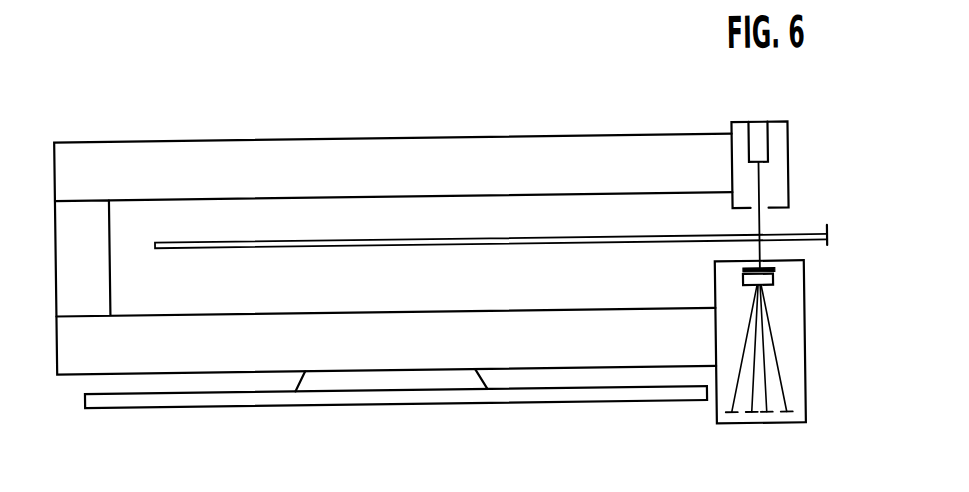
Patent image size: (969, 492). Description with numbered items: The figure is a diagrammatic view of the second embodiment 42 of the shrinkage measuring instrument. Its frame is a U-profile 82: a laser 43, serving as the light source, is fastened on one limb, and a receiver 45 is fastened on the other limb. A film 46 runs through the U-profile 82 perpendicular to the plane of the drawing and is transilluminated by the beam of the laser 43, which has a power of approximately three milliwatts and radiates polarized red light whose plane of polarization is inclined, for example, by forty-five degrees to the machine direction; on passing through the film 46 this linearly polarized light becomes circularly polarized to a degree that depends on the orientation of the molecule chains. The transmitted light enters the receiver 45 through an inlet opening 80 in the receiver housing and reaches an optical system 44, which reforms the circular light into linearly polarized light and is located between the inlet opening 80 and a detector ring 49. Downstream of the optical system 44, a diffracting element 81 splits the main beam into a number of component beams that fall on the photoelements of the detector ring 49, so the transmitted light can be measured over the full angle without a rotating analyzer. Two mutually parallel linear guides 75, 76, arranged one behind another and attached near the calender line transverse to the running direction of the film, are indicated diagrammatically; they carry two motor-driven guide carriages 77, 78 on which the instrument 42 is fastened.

The second embodiment of the shrinkage measuring instrument 42 is at (259, 125).
The U-profile 82 is at (412, 152).
The film 46 is at (300, 246).
The laser 43 is at (762, 138).
The inlet opening 80 is at (756, 263).
The optical system 44 is at (776, 275).
The diffracting element 81 is at (774, 284).
The receiver 45 is at (805, 369).
The detector ring 49 is at (785, 414).
The guide carriage 77 is at (391, 357).
The guide carriage 78 is at (406, 380).
The linear guide 75 is at (396, 423).
The linear guide 76 is at (210, 393).